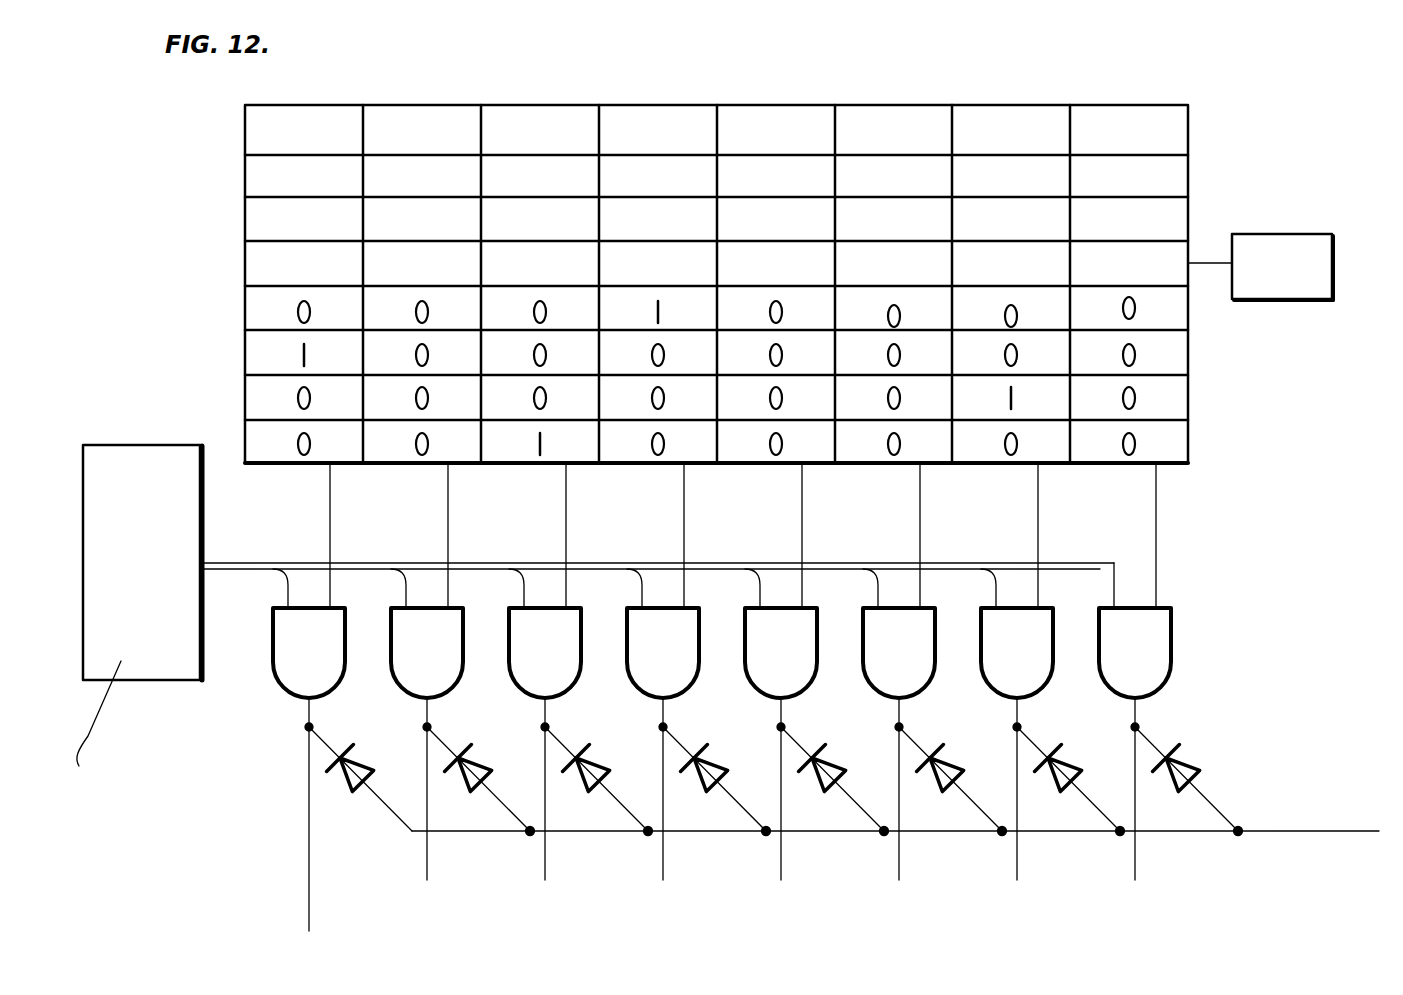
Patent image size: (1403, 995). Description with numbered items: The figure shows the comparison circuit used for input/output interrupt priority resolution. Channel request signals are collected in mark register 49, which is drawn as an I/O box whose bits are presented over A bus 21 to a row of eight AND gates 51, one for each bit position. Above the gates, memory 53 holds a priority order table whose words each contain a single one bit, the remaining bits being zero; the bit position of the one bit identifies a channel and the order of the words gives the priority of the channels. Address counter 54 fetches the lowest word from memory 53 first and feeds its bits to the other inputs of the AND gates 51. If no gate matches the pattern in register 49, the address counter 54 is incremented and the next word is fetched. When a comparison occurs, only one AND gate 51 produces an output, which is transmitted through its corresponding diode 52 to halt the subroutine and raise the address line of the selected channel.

The A bus 21 is at (518, 563).
The mark register 49 is at (128, 445).
The AND gates 51 is at (712, 697).
The diode 52 is at (776, 781).
The memory 53 is at (1188, 416).
The address counter 54 is at (1284, 300).